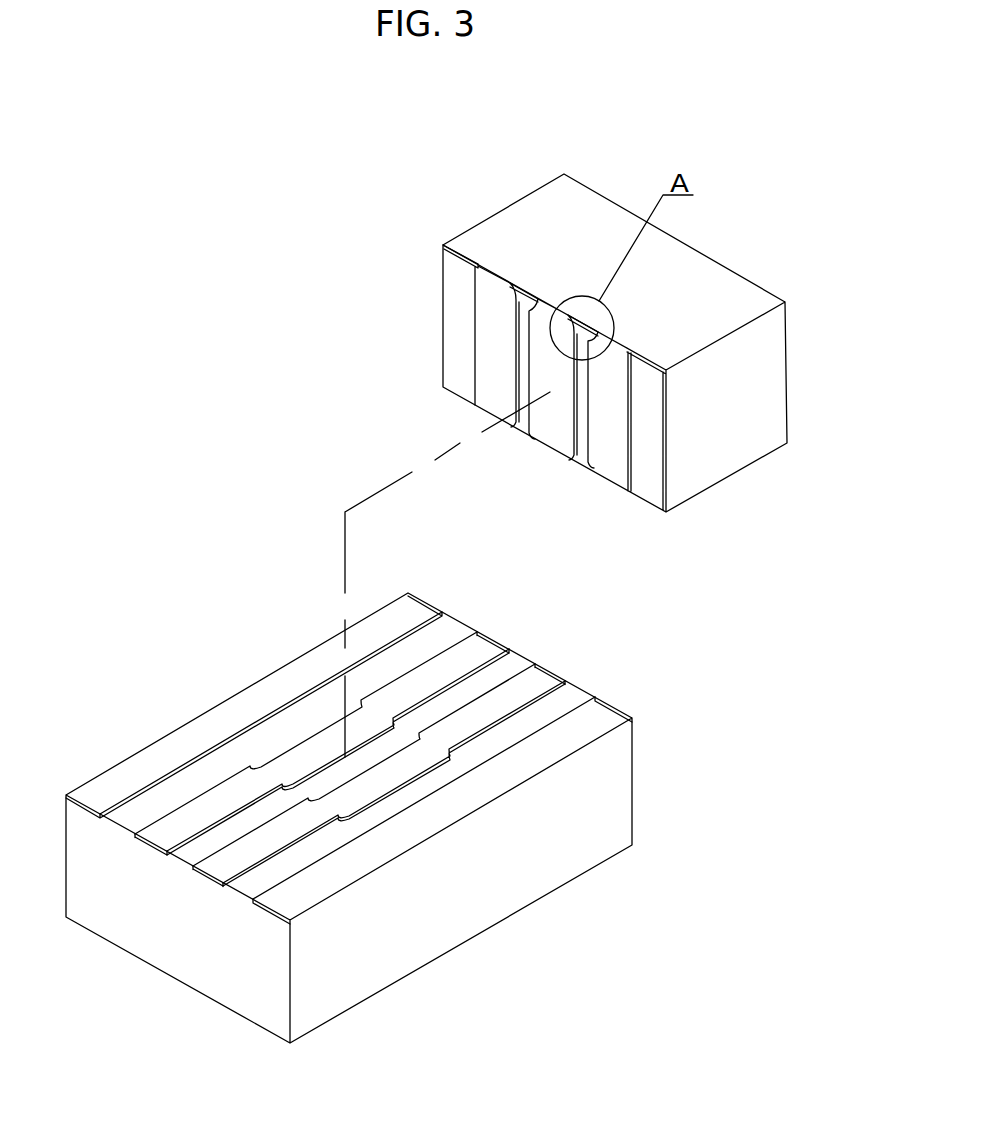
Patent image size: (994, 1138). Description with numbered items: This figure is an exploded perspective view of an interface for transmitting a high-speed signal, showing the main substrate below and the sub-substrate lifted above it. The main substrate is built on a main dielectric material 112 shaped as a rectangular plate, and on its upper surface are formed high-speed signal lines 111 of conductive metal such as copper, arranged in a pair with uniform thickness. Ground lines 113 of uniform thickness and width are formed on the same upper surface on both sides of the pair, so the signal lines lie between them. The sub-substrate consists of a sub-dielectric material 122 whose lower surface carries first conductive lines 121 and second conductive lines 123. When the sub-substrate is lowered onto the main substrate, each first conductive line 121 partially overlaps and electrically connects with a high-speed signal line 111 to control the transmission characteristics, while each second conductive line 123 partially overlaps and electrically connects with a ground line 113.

The high-speed signal line 111 is at (157, 833).
The main dielectric material 112 is at (577, 852).
The ground line 113 is at (385, 845).
The first conductive line 121 is at (580, 418).
The sub-dielectric material 122 is at (735, 458).
The second conductive line 123 is at (462, 367).